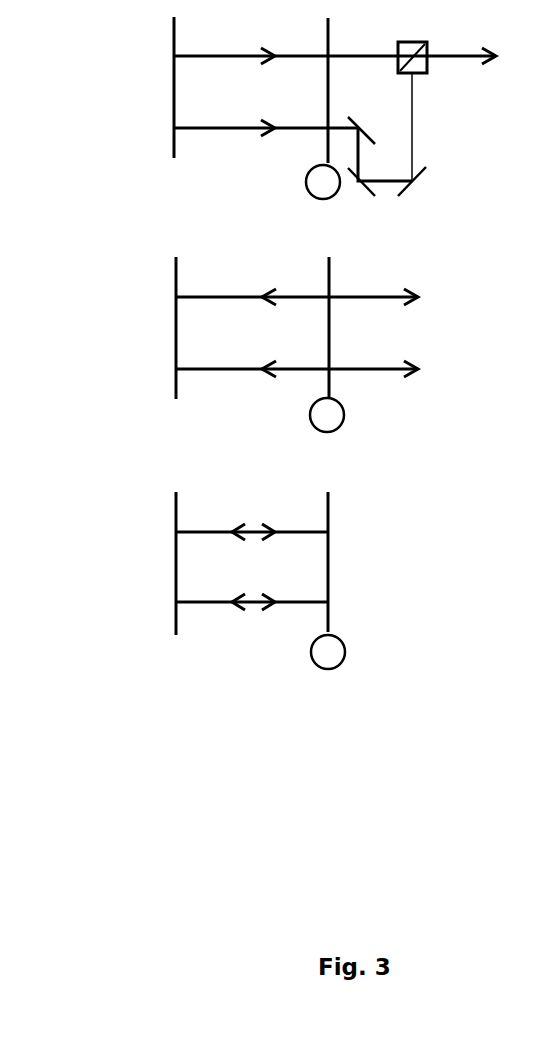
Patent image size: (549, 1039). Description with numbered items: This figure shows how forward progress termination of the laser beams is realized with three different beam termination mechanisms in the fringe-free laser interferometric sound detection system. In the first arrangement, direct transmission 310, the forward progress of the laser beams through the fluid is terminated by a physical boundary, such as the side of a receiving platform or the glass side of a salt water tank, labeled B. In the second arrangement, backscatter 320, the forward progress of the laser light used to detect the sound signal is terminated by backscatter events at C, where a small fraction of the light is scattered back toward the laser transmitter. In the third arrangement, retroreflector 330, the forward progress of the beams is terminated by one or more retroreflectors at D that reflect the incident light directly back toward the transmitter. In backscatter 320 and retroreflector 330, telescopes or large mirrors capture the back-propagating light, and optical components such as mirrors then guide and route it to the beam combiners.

The direct transmission 310 is at (160, 57).
The backscatter 320 is at (162, 300).
The retroreflector 330 is at (170, 532).